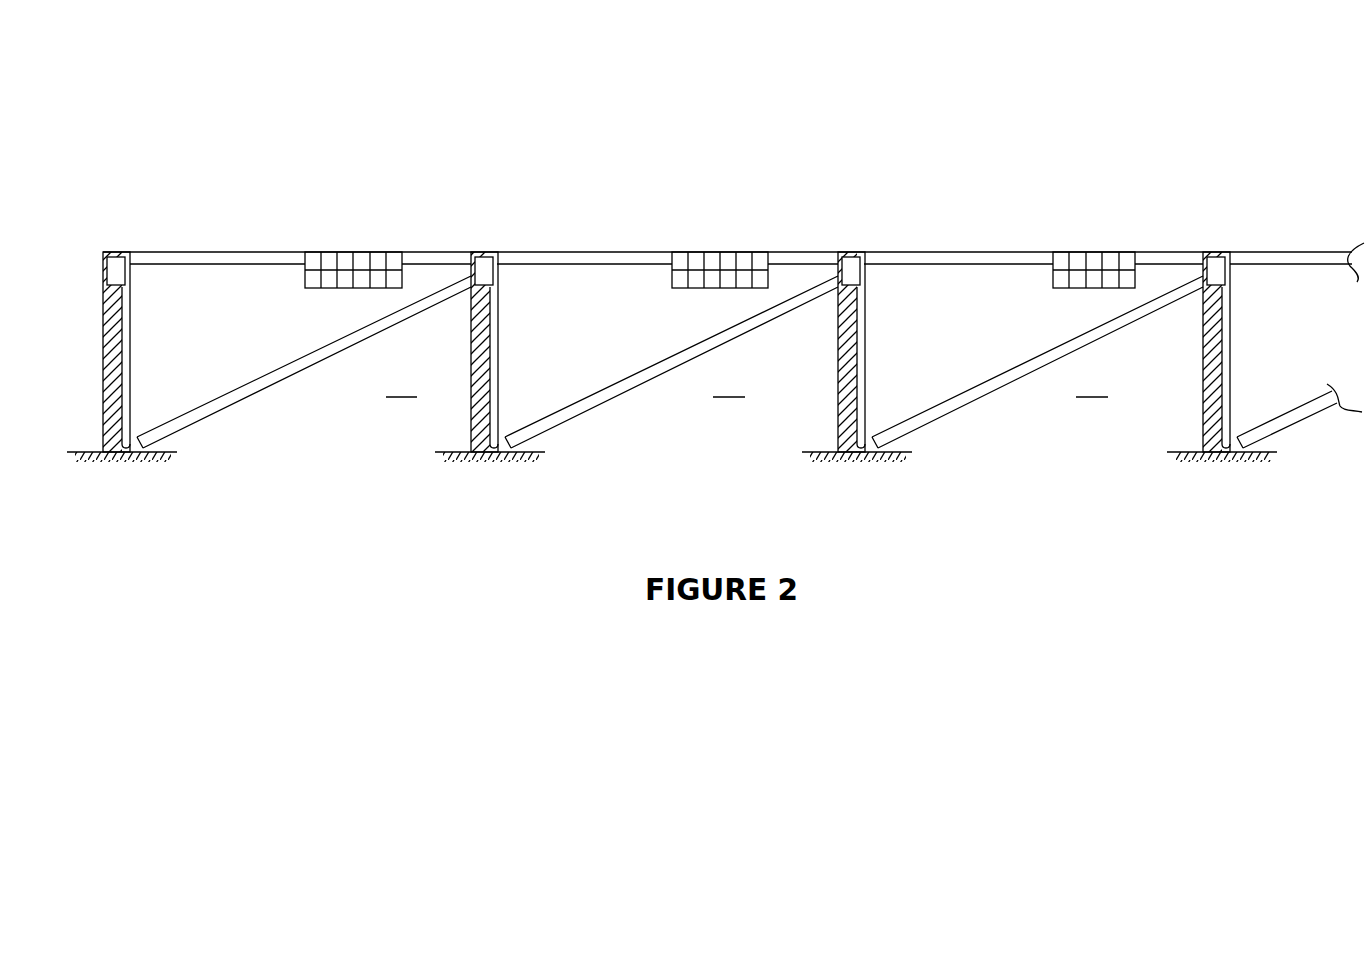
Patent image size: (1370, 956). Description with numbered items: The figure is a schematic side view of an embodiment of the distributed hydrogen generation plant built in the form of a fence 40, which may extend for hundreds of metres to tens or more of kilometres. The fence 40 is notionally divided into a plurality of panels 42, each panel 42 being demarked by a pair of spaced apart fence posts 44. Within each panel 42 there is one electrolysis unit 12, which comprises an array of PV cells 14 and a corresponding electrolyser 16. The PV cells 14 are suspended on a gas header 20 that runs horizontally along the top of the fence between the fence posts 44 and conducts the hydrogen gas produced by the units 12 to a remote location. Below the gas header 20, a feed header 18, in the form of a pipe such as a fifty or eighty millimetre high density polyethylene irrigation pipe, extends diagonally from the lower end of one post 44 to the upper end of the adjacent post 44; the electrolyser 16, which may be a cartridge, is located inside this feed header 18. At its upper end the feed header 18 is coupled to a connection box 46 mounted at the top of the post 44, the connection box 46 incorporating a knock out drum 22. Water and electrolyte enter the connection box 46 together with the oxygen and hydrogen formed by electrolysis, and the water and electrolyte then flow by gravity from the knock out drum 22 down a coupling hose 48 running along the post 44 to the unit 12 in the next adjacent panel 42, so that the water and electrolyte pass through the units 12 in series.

The fence 40 is at (765, 140).
The electrolysis unit 12 is at (347, 410).
The PV cell 14 is at (332, 262).
The electrolyser 16 is at (228, 396).
The feed header 18 is at (749, 362).
The gas header 20 is at (993, 254).
The knock out drum 22 is at (487, 272).
The panel 42 is at (747, 383).
The fence post 44 is at (130, 298).
The connection box 46 is at (666, 271).
The coupling hose 48 is at (122, 343).